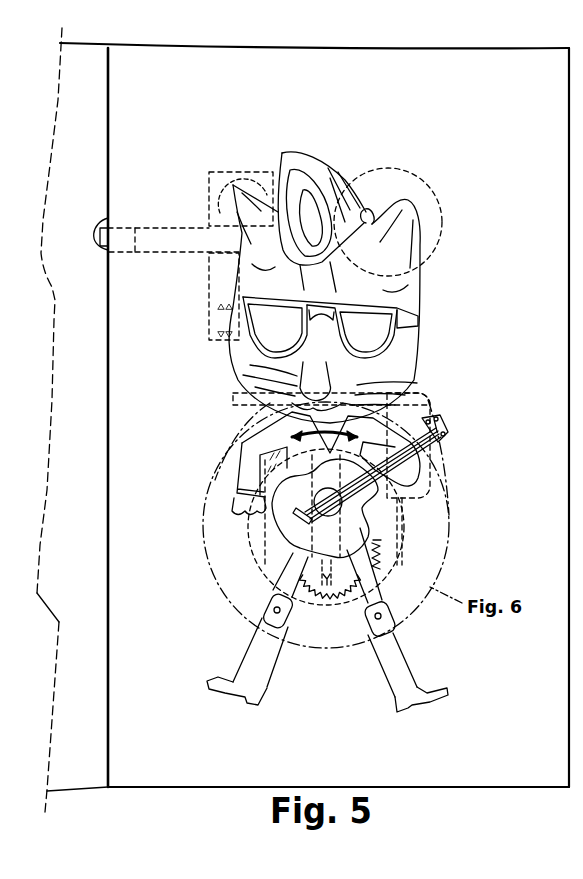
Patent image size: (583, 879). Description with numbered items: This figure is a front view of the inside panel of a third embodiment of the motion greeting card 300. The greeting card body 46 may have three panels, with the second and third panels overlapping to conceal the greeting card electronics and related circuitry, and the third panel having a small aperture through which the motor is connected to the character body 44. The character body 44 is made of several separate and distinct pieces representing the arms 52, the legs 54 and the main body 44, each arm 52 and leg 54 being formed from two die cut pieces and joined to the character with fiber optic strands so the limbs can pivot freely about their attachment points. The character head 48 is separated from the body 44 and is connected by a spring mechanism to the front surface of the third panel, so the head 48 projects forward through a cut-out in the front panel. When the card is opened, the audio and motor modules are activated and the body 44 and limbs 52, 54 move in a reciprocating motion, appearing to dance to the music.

The motion greeting card 300 is at (306, 35).
The greeting card body 46 is at (508, 85).
The character head 48 is at (375, 270).
The arms 52 is at (250, 477).
The character body 44 is at (390, 467).
The legs 54 is at (265, 652).